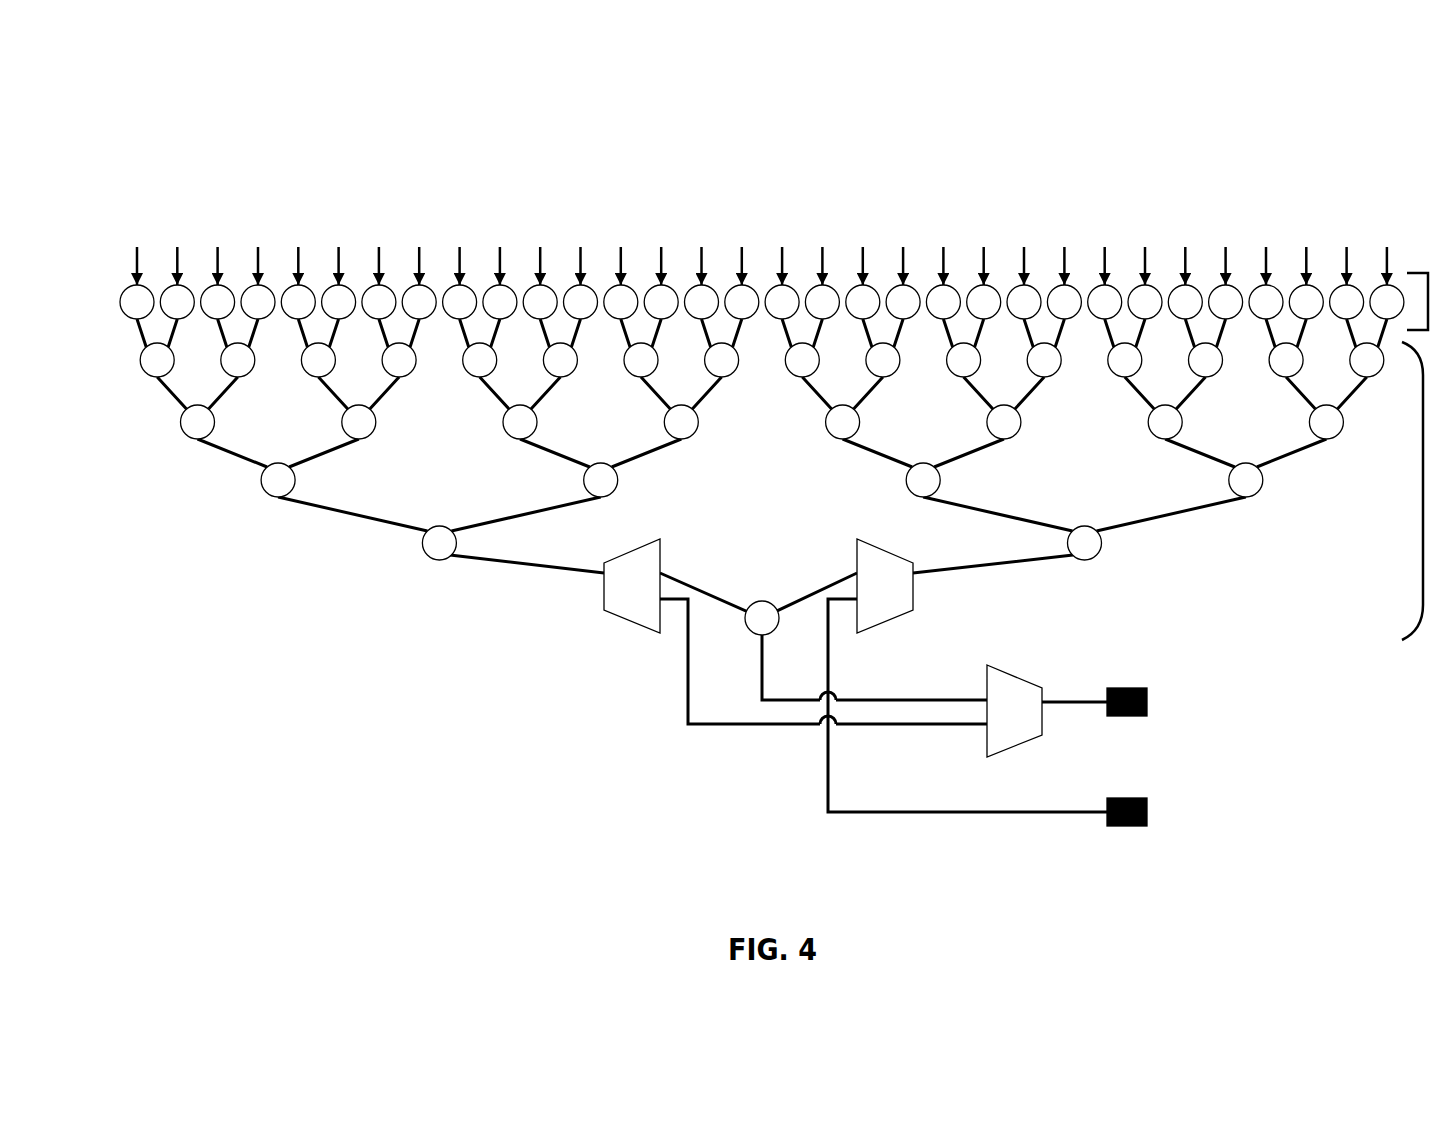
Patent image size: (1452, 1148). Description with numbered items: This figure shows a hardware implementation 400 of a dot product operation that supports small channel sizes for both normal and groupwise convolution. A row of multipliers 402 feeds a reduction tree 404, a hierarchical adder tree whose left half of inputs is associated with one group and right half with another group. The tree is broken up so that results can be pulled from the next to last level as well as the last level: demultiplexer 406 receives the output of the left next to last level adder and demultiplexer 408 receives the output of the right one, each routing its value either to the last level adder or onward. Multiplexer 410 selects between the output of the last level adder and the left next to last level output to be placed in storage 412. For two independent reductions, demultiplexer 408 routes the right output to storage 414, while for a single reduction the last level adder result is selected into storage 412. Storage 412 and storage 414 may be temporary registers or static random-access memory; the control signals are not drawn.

The hardware implementation 400 is at (1352, 83).
The multipliers 402 is at (1428, 300).
The reduction tree 404 is at (1423, 490).
The demultiplexer 406 is at (590, 600).
The demultiplexer 408 is at (935, 596).
The multiplexer 410 is at (1034, 671).
The storage 412 is at (1160, 703).
The storage 414 is at (1160, 810).